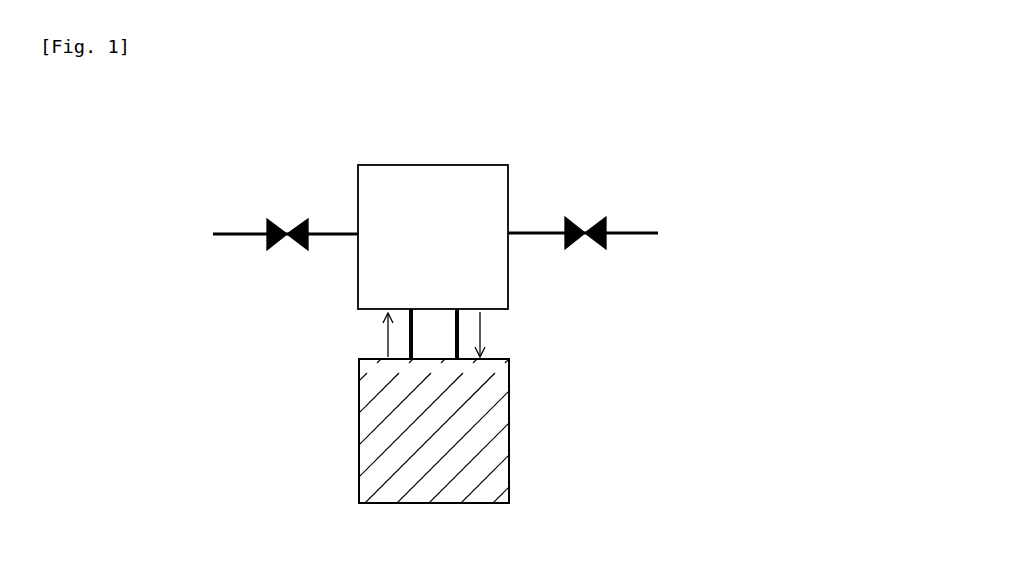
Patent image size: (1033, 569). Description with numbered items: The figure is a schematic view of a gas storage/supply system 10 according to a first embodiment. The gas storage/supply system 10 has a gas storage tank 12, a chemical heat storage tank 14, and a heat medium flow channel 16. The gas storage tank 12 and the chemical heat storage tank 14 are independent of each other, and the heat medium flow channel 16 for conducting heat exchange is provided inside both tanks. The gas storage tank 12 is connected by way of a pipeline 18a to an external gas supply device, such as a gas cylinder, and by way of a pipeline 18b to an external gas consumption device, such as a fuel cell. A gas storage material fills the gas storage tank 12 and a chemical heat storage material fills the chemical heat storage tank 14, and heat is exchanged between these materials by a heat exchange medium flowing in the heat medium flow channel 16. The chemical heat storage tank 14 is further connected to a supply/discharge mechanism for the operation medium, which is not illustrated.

The gas storage/supply system 10 is at (748, 117).
The gas storage tank 12 is at (411, 165).
The chemical heat storage tank 14 is at (509, 405).
The heat medium flow channel 16 is at (457, 323).
The pipeline 18a is at (230, 233).
The pipeline 18b is at (622, 230).